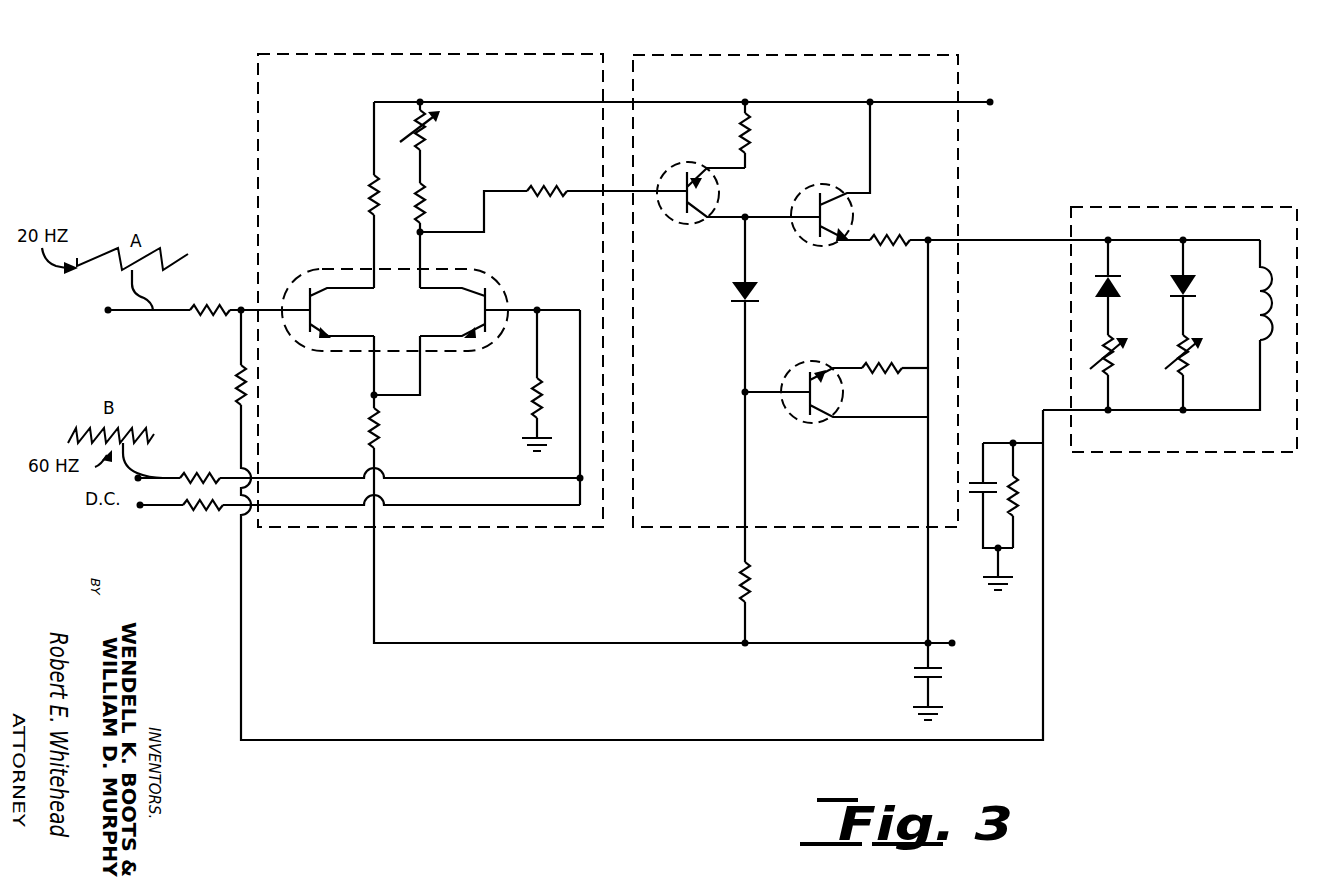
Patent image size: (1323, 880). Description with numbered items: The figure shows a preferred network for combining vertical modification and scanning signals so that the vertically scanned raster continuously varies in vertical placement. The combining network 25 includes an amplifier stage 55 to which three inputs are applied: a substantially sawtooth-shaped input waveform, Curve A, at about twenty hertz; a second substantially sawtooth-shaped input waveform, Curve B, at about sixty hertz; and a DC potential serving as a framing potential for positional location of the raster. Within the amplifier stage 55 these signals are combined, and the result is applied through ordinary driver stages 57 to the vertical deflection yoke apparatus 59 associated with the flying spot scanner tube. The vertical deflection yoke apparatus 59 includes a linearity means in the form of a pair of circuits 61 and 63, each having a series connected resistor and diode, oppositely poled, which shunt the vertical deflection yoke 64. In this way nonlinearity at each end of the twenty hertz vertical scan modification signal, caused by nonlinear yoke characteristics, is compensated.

The combining network 25 is at (615, 57).
The amplifier stage 55 is at (522, 52).
The driver stages 57 is at (809, 54).
The vertical deflection yoke apparatus 59 is at (1230, 205).
The circuit 61 is at (1133, 289).
The circuit 63 is at (1212, 287).
The vertical deflection yoke 64 is at (1265, 314).